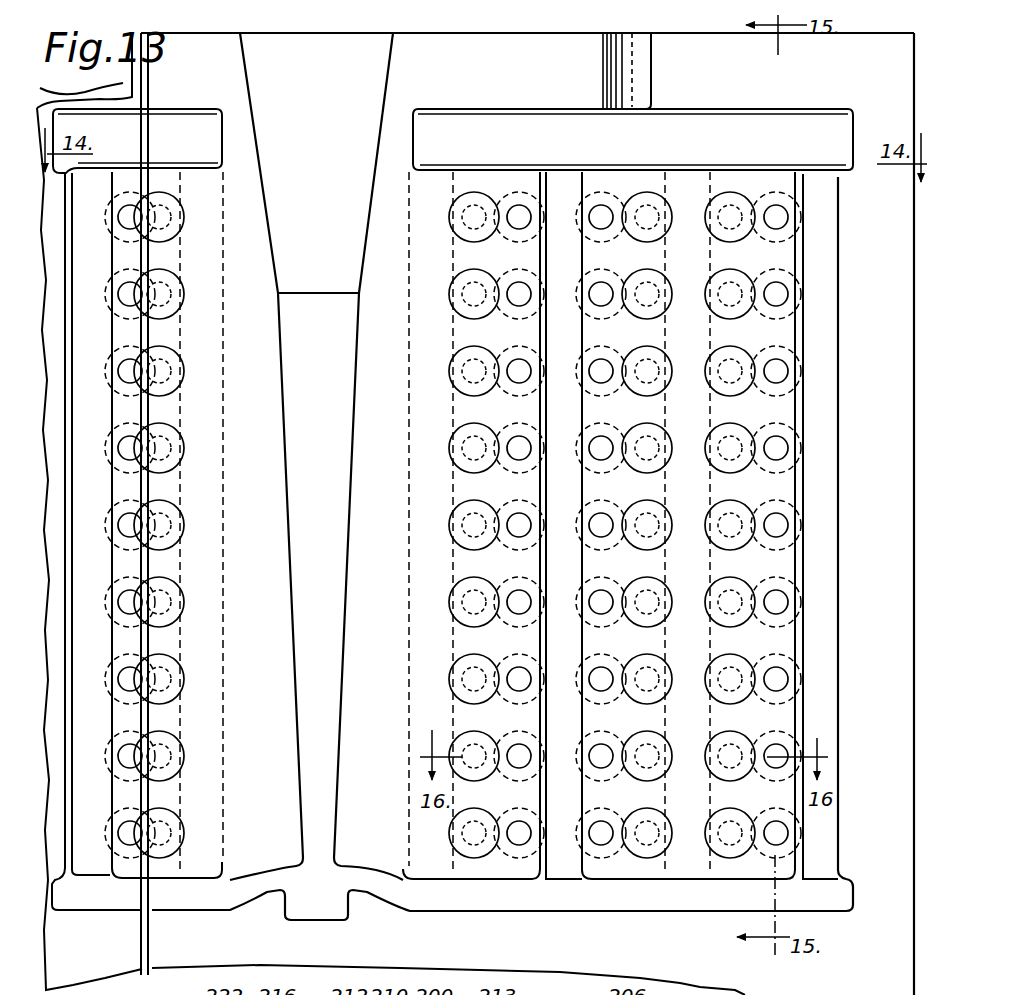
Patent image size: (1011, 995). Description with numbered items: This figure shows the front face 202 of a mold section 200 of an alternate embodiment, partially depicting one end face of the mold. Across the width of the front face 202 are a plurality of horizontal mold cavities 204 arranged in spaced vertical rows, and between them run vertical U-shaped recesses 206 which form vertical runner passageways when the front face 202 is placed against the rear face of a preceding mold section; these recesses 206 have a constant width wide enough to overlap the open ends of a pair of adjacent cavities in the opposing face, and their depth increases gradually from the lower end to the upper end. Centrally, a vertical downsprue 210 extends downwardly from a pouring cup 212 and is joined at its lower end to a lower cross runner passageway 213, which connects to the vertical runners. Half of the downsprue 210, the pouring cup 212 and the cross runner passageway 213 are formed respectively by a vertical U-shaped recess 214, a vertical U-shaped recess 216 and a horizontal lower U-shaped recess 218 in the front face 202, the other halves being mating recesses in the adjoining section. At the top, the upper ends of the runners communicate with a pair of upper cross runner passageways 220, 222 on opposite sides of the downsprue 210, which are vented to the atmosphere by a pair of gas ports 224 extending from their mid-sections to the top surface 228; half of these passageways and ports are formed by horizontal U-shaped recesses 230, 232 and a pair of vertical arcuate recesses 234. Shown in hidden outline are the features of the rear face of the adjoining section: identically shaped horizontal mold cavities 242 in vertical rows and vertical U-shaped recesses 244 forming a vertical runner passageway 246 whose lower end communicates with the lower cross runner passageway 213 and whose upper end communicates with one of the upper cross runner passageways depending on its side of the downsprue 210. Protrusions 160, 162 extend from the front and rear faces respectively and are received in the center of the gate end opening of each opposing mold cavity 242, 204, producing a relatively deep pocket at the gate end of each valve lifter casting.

The protrusion 160 is at (128, 525).
The protrusion 162 is at (183, 558).
The mold section 200 is at (597, 27).
The front face 202 is at (216, 48).
The horizontal mold cavities 204 is at (453, 537).
The vertical U-shaped recesses 206 is at (100, 862).
The vertical downsprue 210 is at (354, 462).
The pouring cup 212 is at (396, 62).
The lower cross runner passageway 213 is at (453, 912).
The vertical U-shaped recess 214 is at (352, 403).
The vertical U-shaped recess 216 is at (387, 96).
The horizontal lower U-shaped recess 218 is at (838, 911).
The upper cross runner passageway 220 is at (478, 106).
The upper cross runner passageway 222 is at (165, 102).
The gas ports 224 is at (657, 55).
The top surface 228 is at (858, 37).
The horizontal U-shaped recess 230 is at (726, 110).
The horizontal U-shaped recess 232 is at (174, 110).
The vertical arcuate recesses 234 is at (655, 68).
The horizontal mold cavities 242 is at (796, 328).
The vertical U-shaped recesses 244 is at (227, 852).
The vertical runner passageway 246 is at (404, 527).